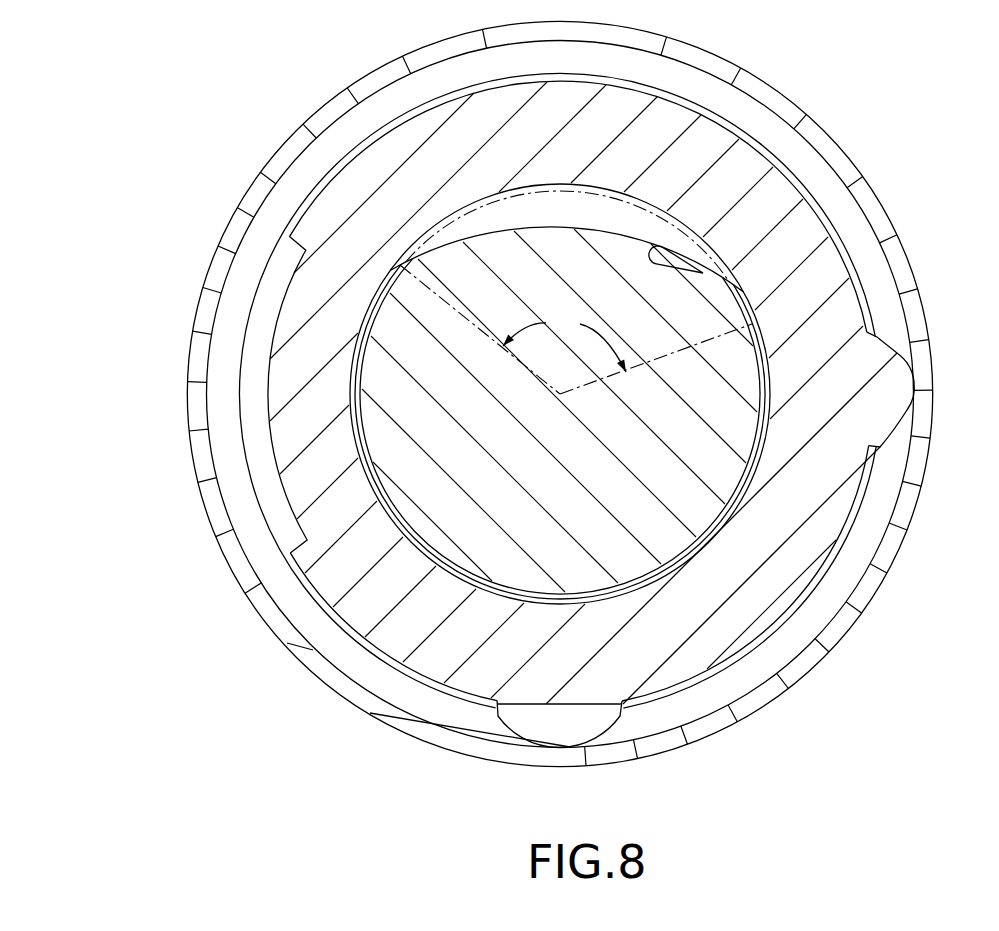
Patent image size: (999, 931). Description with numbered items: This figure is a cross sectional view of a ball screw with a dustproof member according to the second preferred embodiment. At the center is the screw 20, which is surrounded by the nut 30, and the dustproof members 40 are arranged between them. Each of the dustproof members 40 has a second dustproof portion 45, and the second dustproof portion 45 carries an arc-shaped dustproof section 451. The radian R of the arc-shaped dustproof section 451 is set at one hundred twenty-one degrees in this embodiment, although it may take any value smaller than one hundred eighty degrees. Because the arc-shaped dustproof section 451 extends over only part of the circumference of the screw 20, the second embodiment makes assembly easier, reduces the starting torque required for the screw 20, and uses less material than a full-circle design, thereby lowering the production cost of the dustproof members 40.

The screw 20 is at (384, 374).
The nut 30 is at (247, 184).
The dustproof member 40 is at (780, 193).
The second dustproof portion 45 is at (641, 206).
The arc-shaped dustproof section 451 is at (712, 268).